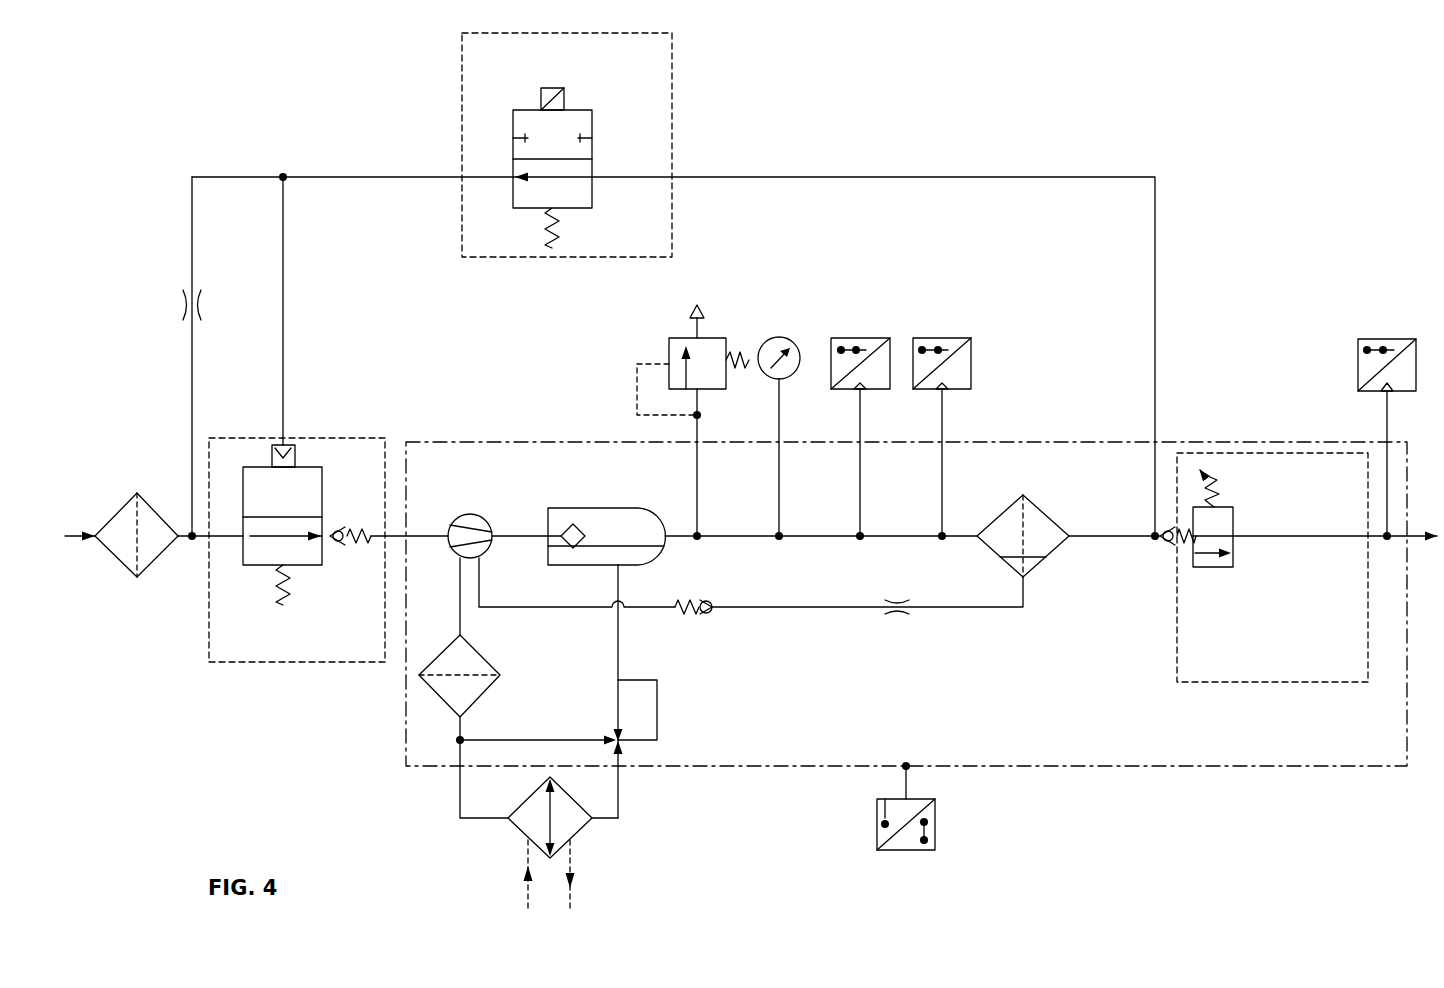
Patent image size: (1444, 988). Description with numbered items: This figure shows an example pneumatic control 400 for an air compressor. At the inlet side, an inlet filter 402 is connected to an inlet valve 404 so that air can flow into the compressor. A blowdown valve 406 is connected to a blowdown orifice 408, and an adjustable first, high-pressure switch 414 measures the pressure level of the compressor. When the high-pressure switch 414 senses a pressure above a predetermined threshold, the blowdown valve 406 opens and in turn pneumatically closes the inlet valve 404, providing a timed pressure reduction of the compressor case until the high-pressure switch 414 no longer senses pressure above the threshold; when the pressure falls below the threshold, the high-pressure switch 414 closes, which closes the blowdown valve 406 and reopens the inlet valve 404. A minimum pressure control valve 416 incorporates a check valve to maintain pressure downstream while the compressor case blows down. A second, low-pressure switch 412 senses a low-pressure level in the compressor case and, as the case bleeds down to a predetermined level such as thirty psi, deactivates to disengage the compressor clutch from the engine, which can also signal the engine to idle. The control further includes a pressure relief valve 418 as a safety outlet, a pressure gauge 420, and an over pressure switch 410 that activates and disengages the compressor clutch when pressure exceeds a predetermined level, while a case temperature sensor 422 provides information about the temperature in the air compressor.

The pneumatic control 400 is at (1178, 62).
The inlet filter 402 is at (140, 584).
The inlet valve 404 is at (307, 572).
The blowdown valve 406 is at (576, 102).
The blowdown orifice 408 is at (187, 292).
The over pressure switch 410 is at (846, 331).
The low-pressure switch 412 is at (966, 331).
The high-pressure switch 414 is at (1368, 332).
The minimum pressure control valve 416 is at (1234, 574).
The pressure relief valve 418 is at (666, 331).
The pressure gauge 420 is at (782, 328).
The case temperature sensor 422 is at (872, 839).